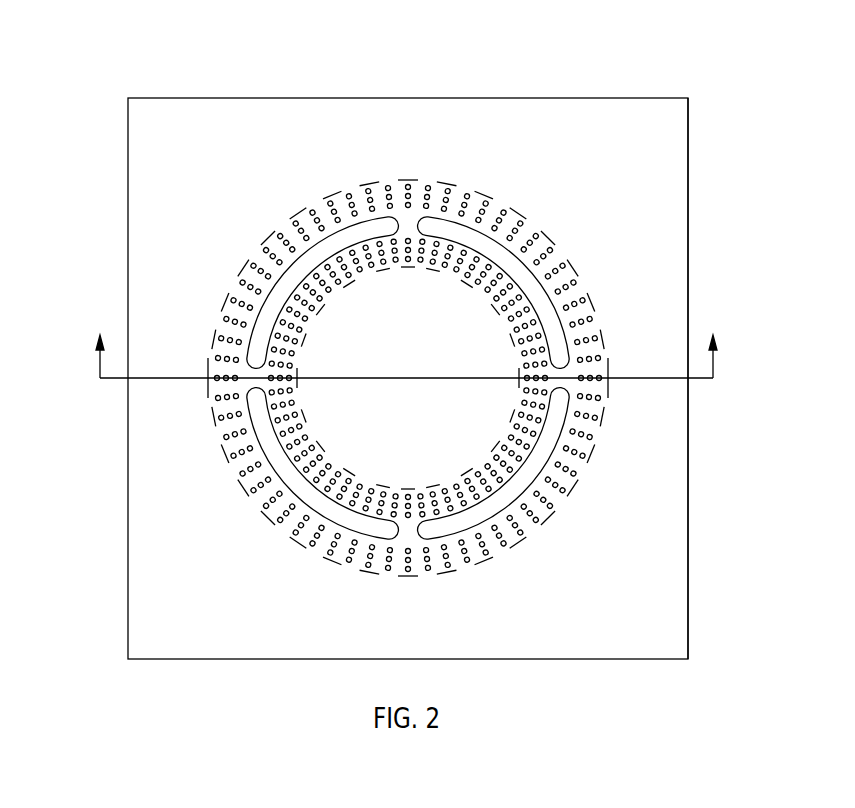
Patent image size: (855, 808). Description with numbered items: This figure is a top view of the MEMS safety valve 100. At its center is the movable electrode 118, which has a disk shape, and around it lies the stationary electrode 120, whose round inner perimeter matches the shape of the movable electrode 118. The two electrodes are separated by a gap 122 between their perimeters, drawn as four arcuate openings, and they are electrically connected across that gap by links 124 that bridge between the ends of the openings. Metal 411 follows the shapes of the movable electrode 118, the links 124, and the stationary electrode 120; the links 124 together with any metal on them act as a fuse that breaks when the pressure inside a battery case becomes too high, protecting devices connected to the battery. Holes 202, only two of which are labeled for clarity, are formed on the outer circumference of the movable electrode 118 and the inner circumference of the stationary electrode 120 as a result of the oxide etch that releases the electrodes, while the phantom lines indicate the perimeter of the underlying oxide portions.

The MEMS safety valve 100 is at (136, 70).
The movable electrode 118 is at (418, 361).
The stationary electrode 120 is at (688, 204).
The gap 122 is at (364, 224).
The links 124 is at (414, 221).
The holes 202 is at (555, 258).
The metal 411 is at (688, 568).